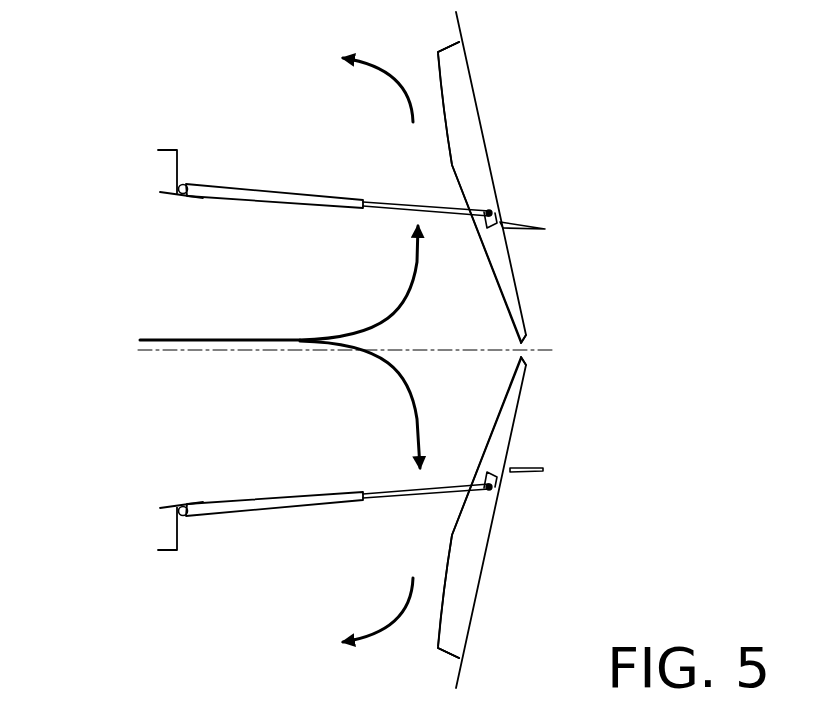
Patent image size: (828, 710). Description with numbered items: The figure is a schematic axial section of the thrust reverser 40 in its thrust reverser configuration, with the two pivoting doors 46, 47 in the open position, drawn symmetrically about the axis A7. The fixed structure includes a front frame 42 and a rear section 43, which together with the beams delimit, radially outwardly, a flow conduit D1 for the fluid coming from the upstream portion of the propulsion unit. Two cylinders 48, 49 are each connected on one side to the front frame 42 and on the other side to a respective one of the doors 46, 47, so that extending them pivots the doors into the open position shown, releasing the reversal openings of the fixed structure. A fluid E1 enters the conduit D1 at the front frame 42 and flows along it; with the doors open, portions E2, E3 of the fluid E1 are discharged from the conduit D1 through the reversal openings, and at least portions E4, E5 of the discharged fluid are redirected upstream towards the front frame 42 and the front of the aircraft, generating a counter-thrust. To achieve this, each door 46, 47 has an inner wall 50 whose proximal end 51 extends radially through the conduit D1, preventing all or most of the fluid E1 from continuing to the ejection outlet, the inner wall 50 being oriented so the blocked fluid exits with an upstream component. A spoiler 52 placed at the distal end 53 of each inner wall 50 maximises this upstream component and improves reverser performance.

The thrust reverser 40 is at (105, 165).
The front frame 42 is at (166, 148).
The rear section 43 is at (525, 225).
The pivoting door 46 is at (490, 540).
The pivoting door 47 is at (488, 146).
The cylinder 48 is at (258, 194).
The cylinder 49 is at (250, 514).
The inner wall 50 is at (450, 163).
The proximal end 51 is at (507, 298).
The spoiler 52 is at (439, 50).
The distal end 53 is at (452, 57).
The axis of symmetry A7 is at (550, 349).
The flow conduit D1 is at (209, 411).
The fluid E1 is at (210, 338).
The portion of the fluid E2 is at (408, 277).
The portion of the fluid E3 is at (410, 402).
The portion of the discharged fluid E4 is at (385, 73).
The portion of the discharged fluid E5 is at (378, 638).